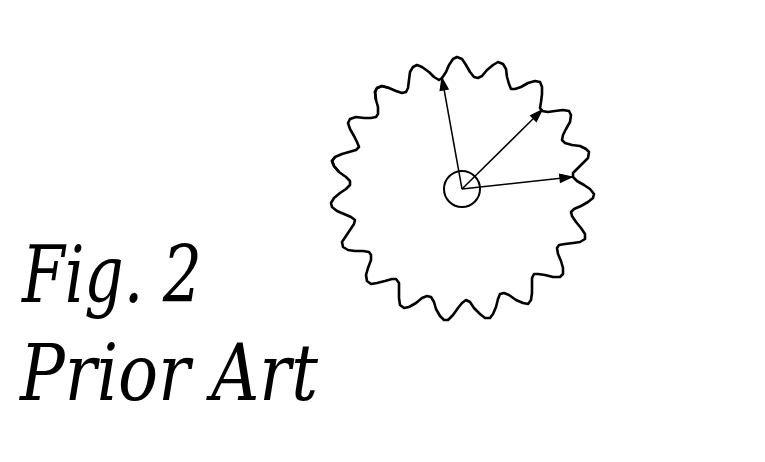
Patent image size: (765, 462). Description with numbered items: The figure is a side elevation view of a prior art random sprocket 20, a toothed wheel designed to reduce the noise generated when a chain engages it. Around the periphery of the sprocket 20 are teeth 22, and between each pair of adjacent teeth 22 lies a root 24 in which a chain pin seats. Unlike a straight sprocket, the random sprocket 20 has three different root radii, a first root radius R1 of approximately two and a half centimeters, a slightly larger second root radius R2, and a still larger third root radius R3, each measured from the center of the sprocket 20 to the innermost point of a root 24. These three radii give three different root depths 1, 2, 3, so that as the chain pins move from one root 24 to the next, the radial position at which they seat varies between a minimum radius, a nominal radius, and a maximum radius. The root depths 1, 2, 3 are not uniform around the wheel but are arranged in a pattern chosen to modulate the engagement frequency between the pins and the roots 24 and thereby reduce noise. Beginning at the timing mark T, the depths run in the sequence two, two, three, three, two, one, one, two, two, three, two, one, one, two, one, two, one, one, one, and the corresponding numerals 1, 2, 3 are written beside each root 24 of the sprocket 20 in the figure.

The random sprocket 20 is at (477, 278).
The teeth 22 is at (377, 87).
The roots 24 is at (333, 168).
The first root radius R1 is at (452, 122).
The second root radius R2 is at (525, 183).
The third root radius R3 is at (530, 127).
The timing mark T is at (481, 94).
The first root depth 1 is at (461, 181).
The second root depth 2 is at (465, 187).
The third root depth 3 is at (522, 208).